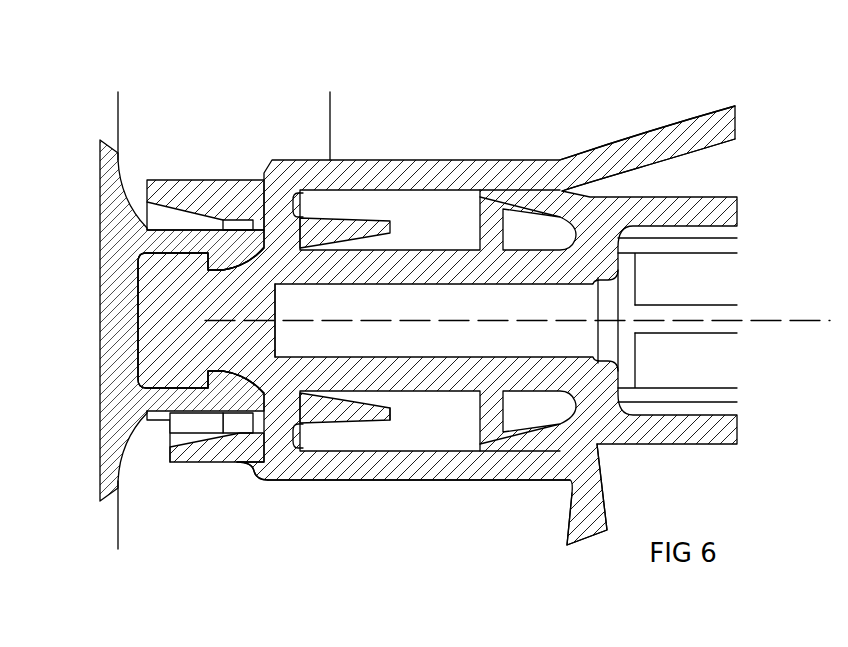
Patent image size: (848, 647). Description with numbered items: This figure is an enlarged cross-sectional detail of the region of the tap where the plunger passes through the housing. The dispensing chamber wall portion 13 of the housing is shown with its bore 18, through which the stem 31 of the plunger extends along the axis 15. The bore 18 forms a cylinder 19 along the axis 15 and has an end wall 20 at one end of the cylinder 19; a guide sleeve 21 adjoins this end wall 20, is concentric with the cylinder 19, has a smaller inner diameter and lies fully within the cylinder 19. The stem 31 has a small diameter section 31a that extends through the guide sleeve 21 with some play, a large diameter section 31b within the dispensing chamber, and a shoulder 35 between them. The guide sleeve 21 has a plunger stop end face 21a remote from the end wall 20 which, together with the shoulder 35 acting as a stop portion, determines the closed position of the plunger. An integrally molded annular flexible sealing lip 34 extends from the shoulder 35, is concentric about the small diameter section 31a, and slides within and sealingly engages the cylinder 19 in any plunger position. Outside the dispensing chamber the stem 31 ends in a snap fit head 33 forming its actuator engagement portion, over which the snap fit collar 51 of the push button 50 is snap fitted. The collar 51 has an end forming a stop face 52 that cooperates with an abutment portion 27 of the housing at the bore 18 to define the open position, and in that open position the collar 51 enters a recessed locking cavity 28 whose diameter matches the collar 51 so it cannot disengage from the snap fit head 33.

The dispensing chamber wall portion 13 is at (722, 123).
The axis 15 is at (742, 300).
The bore 18 is at (379, 213).
The cylinder 19 is at (437, 462).
The end wall 20 is at (243, 456).
The guide sleeve 21 is at (343, 407).
The plunger stop end face 21a is at (383, 420).
The abutment portion 27 is at (277, 473).
The recessed locking cavity 28 is at (205, 426).
The stem 31 is at (446, 247).
The small diameter section 31a is at (422, 375).
The large diameter section 31b is at (684, 211).
The snap fit head 33 is at (172, 322).
The annular flexible sealing lip 34 is at (528, 437).
The shoulder 35 is at (618, 398).
The push button 50 is at (80, 238).
The snap fit collar 51 is at (170, 243).
The stop face 52 is at (230, 238).